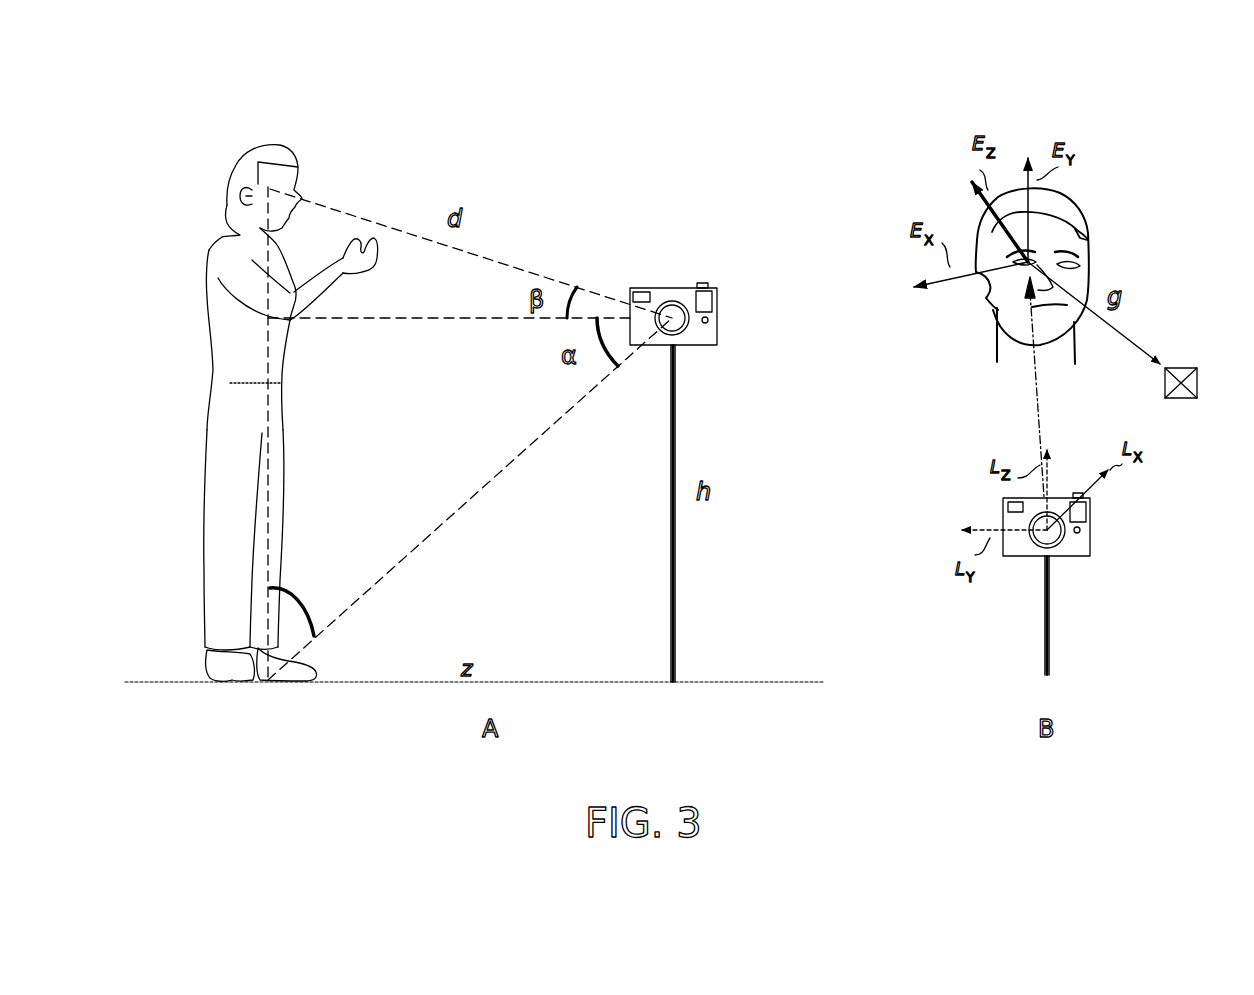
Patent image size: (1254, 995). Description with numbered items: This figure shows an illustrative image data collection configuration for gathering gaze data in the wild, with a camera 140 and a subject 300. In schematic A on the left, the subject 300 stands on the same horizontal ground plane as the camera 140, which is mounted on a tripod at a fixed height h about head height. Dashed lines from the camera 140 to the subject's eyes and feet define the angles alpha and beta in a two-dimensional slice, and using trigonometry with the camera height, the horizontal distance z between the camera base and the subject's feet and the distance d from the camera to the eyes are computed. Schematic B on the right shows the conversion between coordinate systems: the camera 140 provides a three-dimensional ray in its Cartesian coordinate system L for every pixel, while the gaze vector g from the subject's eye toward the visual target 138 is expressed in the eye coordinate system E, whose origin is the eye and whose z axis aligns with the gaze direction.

The subject 300 is at (310, 148).
The camera 140 is at (718, 306).
The visual target 138 is at (1181, 366).